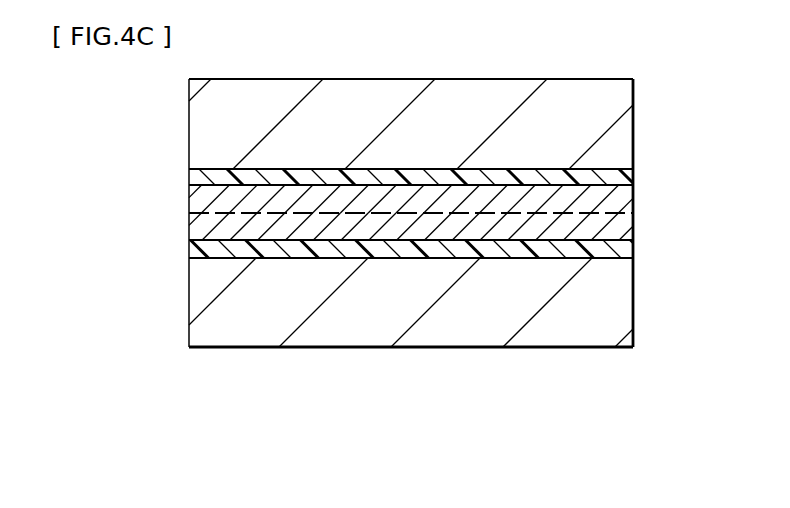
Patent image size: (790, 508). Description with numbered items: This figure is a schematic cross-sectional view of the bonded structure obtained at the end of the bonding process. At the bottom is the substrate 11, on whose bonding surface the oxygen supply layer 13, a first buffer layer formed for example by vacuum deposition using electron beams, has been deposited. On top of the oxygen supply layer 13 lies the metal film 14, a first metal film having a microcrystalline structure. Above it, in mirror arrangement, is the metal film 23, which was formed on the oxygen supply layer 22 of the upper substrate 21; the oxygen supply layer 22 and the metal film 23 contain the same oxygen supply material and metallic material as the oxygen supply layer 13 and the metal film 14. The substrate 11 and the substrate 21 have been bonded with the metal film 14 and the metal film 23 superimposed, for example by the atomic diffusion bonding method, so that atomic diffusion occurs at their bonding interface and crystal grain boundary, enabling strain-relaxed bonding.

The substrate 21 is at (627, 122).
The oxygen supply layer 22 is at (632, 177).
The metal film 23 is at (625, 199).
The metal film 14 is at (625, 228).
The oxygen supply layer 13 is at (625, 250).
The substrate 11 is at (625, 300).